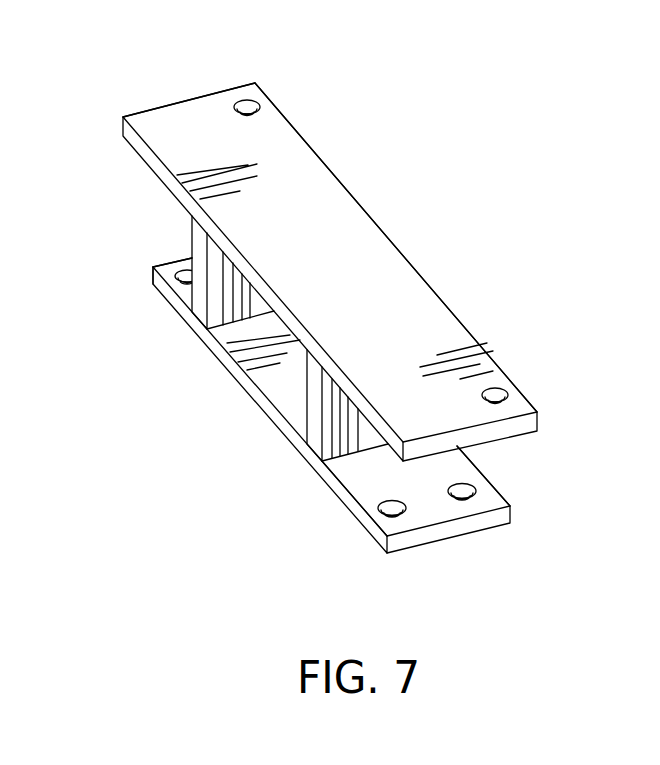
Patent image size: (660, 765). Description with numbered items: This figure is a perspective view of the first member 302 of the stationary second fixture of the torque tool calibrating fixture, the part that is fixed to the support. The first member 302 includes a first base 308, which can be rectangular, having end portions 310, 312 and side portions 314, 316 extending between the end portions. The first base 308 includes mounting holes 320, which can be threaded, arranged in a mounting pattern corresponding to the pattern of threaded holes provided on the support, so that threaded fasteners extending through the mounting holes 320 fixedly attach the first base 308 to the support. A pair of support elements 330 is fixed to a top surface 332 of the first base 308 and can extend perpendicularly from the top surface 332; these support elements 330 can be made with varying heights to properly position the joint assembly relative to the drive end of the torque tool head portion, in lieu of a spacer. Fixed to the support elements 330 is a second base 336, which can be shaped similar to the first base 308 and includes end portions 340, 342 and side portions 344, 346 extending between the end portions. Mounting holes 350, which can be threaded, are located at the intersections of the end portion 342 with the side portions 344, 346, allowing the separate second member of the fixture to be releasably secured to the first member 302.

The first member 302 is at (460, 119).
The first base 308 is at (275, 387).
The end portion 310 is at (202, 343).
The end portion 312 is at (468, 455).
The side portion 314 is at (442, 536).
The side portion 316 is at (160, 265).
The mounting holes 320 is at (178, 281).
The support elements 330 is at (200, 246).
The top surface 332 is at (350, 470).
The second base 336 is at (365, 237).
The end portion 340 is at (285, 318).
The end portion 342 is at (430, 286).
The side portion 344 is at (527, 421).
The side portion 346 is at (167, 102).
The mounting holes 350 is at (262, 103).